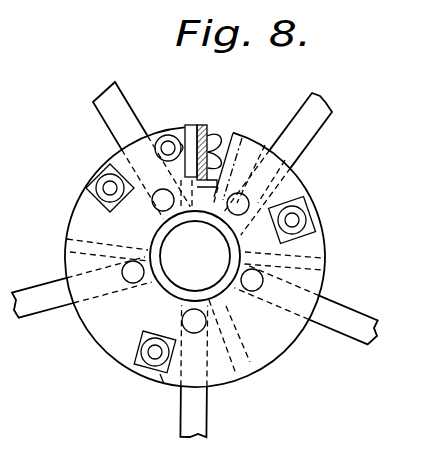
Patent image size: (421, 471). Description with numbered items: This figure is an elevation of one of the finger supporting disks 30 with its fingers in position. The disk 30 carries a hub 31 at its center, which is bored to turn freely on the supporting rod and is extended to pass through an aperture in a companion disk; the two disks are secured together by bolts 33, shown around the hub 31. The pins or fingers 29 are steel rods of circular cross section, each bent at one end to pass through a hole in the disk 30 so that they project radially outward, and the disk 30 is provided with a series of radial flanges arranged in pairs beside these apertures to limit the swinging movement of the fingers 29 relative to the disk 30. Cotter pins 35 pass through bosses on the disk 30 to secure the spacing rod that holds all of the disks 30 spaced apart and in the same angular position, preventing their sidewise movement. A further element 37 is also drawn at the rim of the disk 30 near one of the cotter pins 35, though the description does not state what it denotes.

The pins or fingers 29 is at (345, 315).
The disk 30 is at (305, 242).
The hub 31 is at (222, 298).
The bolts 33 is at (88, 183).
The cotter pins 35 is at (168, 133).
The key bar 37 is at (203, 128).